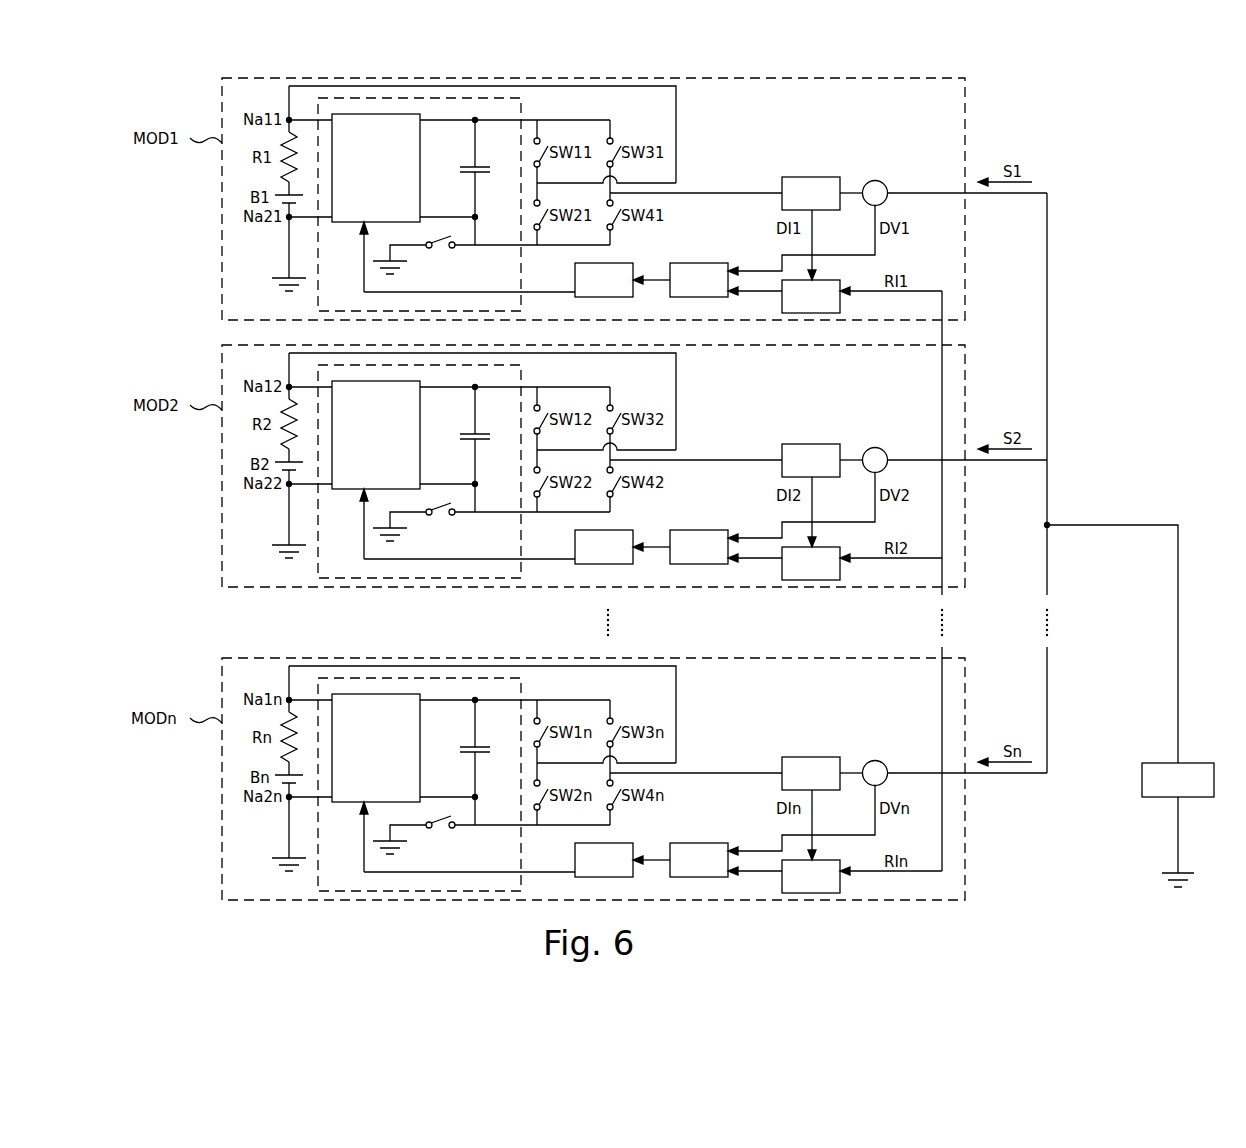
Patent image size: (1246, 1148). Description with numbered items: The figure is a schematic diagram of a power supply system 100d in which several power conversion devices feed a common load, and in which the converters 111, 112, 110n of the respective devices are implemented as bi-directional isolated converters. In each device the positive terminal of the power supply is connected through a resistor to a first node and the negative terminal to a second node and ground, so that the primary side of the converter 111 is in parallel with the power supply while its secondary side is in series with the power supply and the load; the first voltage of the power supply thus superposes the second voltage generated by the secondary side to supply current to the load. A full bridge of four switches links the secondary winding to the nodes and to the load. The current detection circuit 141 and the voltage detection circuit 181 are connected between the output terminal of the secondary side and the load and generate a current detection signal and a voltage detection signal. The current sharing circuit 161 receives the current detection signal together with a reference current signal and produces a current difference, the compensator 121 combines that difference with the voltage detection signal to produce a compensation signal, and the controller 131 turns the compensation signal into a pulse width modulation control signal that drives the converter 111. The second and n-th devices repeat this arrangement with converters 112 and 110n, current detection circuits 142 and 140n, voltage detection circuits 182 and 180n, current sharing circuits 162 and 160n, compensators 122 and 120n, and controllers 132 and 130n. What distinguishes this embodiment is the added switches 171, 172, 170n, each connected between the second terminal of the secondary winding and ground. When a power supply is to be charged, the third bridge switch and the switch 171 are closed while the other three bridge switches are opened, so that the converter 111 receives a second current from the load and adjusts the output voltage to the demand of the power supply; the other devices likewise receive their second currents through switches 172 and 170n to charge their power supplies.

The power supply system 100d is at (65, 61).
The converter 111 is at (521, 98).
The converter 112 is at (464, 470).
The converter 110n is at (464, 783).
The switch 171 is at (453, 249).
The switch 172 is at (491, 530).
The switch 170n is at (491, 843).
The compensator 121 is at (685, 289).
The compensator 122 is at (680, 547).
The compensator 120n is at (680, 860).
The controller 131 is at (590, 289).
The controller 132 is at (604, 547).
The controller 130n is at (604, 860).
The current detection circuit 141 is at (797, 203).
The current detection circuit 142 is at (822, 460).
The current detection circuit 140n is at (822, 773).
The current sharing circuit 161 is at (797, 306).
The current sharing circuit 162 is at (835, 563).
The current sharing circuit 160n is at (835, 876).
The voltage detection circuit 181 is at (872, 180).
The voltage detection circuit 182 is at (952, 444).
The voltage detection circuit 180n is at (949, 757).